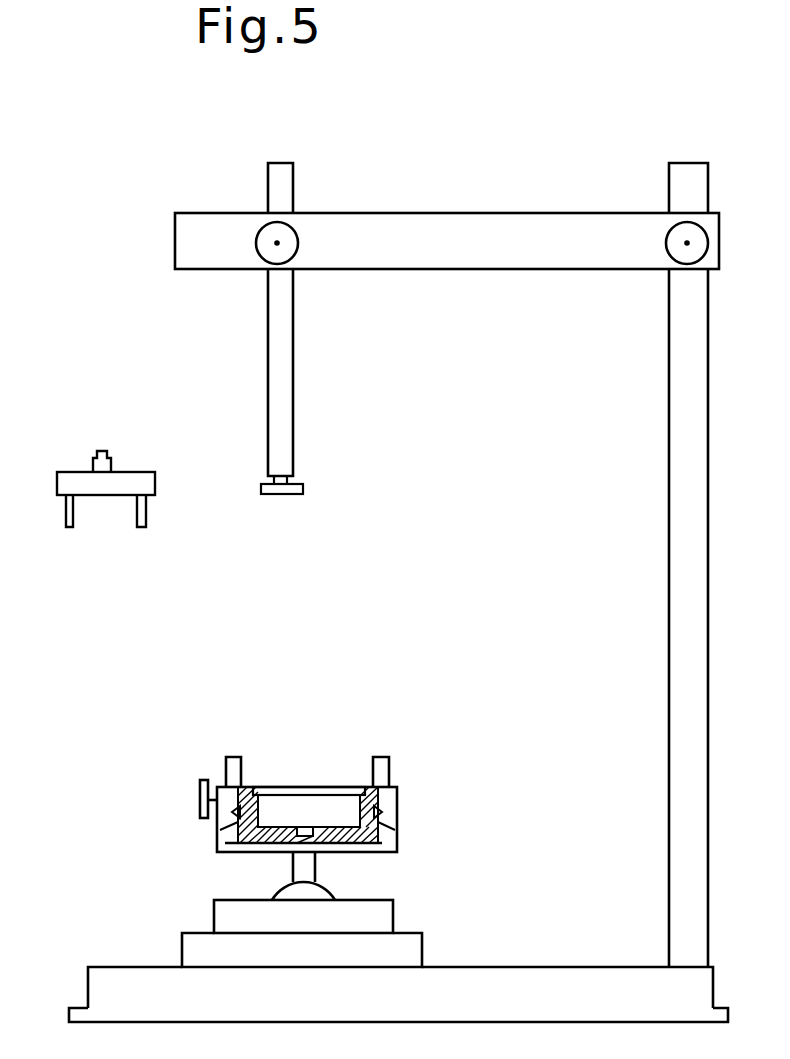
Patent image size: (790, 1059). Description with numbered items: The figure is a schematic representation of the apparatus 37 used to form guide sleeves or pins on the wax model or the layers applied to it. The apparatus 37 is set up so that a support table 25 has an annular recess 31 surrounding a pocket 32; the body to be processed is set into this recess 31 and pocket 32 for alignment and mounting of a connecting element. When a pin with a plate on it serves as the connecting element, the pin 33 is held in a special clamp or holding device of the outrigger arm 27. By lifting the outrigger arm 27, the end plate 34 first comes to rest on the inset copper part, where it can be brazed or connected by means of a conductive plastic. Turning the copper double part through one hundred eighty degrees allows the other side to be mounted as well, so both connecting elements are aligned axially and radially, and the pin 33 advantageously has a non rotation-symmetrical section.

The support table 25 is at (227, 826).
The outrigger arm 27 is at (446, 230).
The annular recess 31 is at (272, 787).
The pocket 32 is at (317, 803).
The pin 33 is at (282, 373).
The end plate 34 is at (303, 490).
The apparatus 37 is at (85, 480).